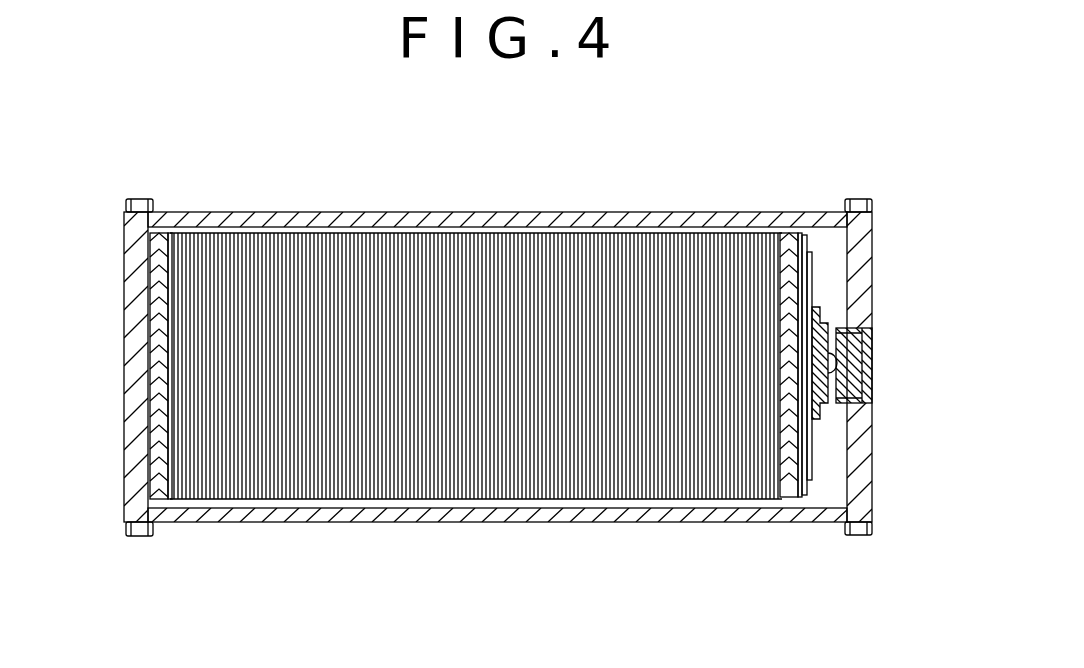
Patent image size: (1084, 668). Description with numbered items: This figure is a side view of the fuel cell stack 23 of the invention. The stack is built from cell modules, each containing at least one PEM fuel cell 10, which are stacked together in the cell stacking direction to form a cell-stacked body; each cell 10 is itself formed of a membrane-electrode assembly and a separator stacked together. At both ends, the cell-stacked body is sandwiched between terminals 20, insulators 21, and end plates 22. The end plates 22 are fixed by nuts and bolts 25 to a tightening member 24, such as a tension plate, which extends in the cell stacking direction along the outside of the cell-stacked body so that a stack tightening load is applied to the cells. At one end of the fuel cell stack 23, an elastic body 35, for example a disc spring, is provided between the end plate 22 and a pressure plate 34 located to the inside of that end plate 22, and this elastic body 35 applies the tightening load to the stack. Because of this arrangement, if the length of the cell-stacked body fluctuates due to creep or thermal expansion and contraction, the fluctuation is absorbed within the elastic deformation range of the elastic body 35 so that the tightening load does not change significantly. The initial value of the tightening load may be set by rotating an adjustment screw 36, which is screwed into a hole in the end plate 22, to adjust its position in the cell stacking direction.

The PEM fuel cell 10 is at (382, 239).
The terminal 20 is at (169, 240).
The insulator 21 is at (154, 250).
The end plate 22 is at (133, 257).
The fuel cell stack 23 is at (563, 207).
The tightening member 24 is at (268, 218).
The nuts and bolts 25 is at (858, 198).
The pressure plate 34 is at (812, 237).
The elastic body 35 is at (812, 287).
The adjustment screw 36 is at (866, 406).